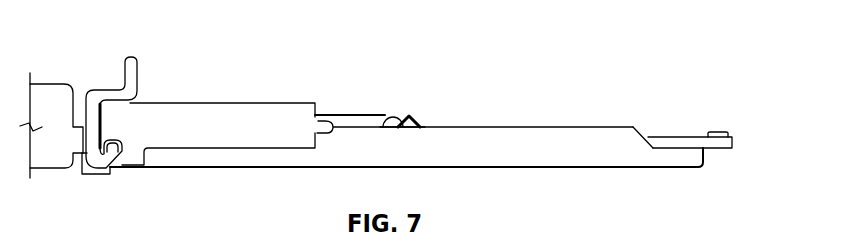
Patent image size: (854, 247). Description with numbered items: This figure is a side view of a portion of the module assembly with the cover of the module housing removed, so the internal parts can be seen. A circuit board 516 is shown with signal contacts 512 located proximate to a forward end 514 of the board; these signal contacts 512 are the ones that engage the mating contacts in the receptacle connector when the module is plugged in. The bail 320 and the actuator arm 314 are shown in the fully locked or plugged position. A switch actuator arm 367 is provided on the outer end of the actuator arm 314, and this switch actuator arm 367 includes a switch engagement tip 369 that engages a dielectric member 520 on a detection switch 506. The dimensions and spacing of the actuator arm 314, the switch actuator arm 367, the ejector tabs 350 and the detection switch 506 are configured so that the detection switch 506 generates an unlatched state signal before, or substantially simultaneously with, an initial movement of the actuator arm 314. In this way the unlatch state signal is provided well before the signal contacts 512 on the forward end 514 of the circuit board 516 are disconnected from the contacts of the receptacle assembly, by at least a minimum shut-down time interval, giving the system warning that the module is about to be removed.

The bail 320 is at (124, 48).
The actuator arm 314 is at (168, 112).
The ejector tabs 350 is at (316, 125).
The switch actuator arm 367 is at (340, 113).
The switch engagement tip 369 is at (388, 114).
The dielectric member 520 is at (394, 115).
The detection switch 506 is at (412, 102).
The circuit board 516 is at (655, 132).
The signal contacts 512 is at (722, 131).
The forward end 514 is at (745, 149).